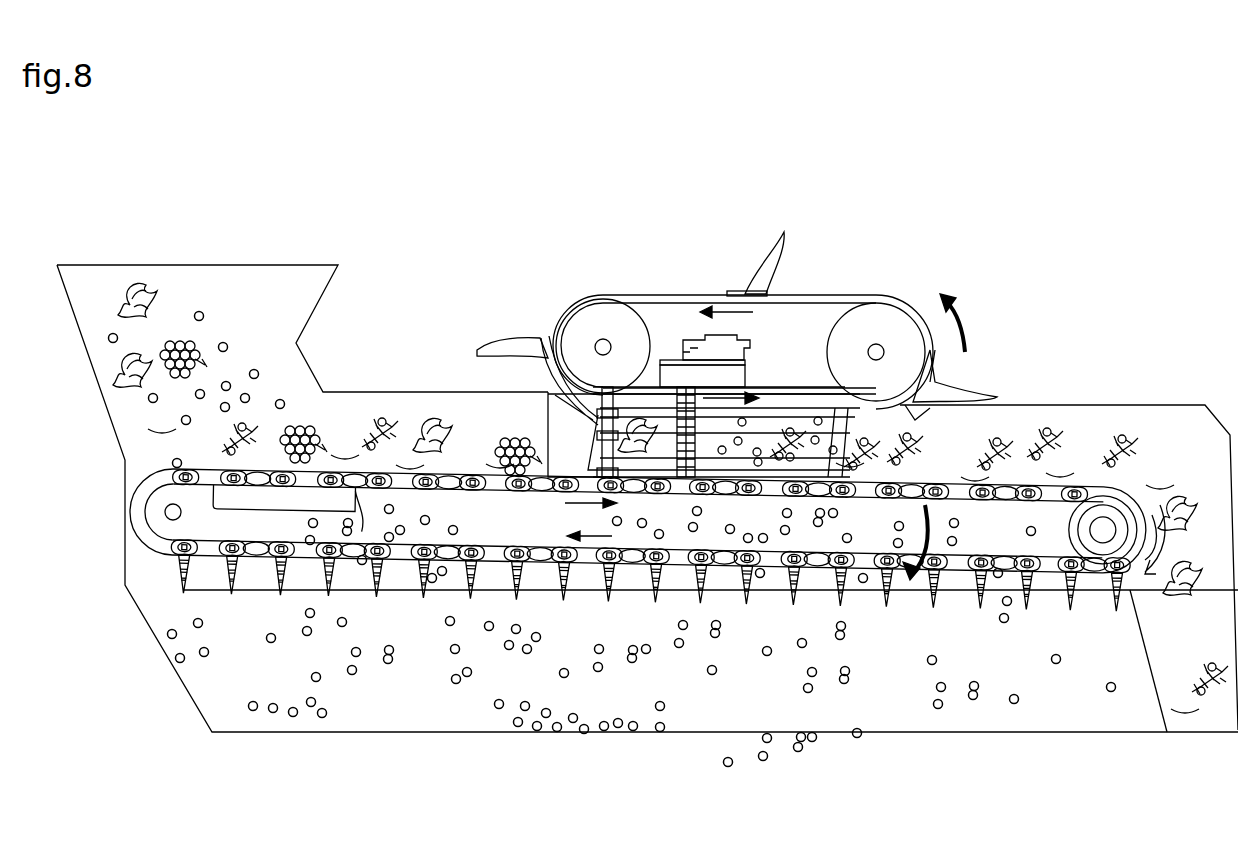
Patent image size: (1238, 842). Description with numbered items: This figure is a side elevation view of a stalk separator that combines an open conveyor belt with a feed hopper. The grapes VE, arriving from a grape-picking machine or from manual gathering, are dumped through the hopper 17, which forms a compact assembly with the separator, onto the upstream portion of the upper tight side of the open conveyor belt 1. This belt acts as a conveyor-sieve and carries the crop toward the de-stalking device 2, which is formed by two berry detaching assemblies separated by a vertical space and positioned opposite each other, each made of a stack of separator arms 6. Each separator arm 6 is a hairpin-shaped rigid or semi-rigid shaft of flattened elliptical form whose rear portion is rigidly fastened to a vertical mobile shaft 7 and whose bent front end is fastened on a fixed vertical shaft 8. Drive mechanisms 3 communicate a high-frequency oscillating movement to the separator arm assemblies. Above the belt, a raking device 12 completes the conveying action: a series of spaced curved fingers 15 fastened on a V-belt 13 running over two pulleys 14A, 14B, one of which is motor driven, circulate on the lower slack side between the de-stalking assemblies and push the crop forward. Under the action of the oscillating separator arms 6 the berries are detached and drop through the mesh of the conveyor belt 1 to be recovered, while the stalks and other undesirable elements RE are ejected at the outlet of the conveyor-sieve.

The conveyor belt 1 is at (153, 538).
The de-stalking device 2 is at (750, 440).
The drive mechanisms 3 is at (730, 318).
The separator arm 6 is at (910, 455).
The vertical mobile shaft 7 is at (682, 393).
The fixed vertical shaft 8 is at (553, 395).
The raking device 12 is at (759, 291).
The V-belt 13 is at (683, 297).
The pulley 14A is at (881, 327).
The pulley 14B is at (594, 324).
The curved fingers 15 is at (490, 348).
The hopper 17 is at (300, 272).
The grapes VE is at (116, 280).
The stalks and other undesirable elements RE is at (1084, 450).